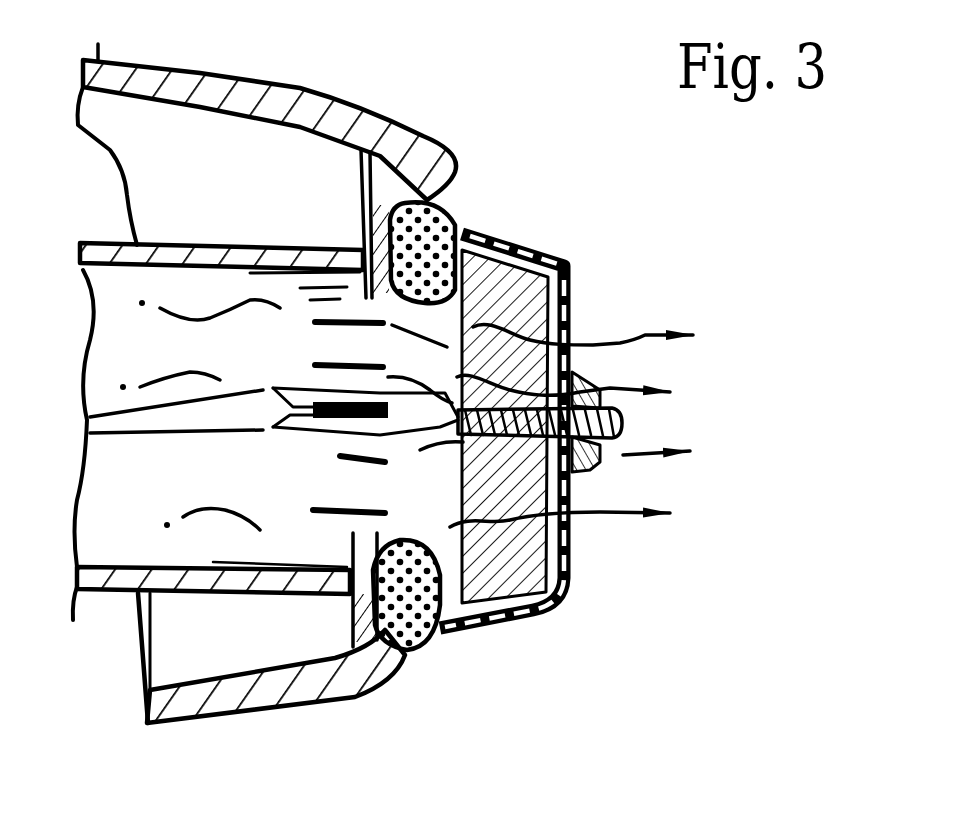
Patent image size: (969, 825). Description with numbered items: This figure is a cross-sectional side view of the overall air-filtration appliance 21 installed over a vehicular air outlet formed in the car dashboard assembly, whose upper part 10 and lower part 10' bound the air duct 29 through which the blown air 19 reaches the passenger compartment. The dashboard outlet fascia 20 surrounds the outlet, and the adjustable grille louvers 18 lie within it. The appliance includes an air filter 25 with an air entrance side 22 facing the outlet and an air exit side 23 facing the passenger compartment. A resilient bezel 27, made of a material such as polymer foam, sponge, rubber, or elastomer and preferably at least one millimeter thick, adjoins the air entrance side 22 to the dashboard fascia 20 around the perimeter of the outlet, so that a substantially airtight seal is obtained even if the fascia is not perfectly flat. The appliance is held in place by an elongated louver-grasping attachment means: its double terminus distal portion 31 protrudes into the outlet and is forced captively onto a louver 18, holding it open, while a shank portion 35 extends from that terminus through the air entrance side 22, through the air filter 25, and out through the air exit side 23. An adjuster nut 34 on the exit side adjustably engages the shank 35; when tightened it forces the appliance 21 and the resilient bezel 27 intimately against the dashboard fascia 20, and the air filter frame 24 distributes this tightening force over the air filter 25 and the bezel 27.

The car dashboard assembly (upper) 10 is at (267, 144).
The car dashboard assembly (lower) 10' is at (225, 519).
The louver of adjustable grille 18 is at (310, 462).
The blown air 19 is at (672, 355).
The dashboard outlet fascia 20 is at (367, 245).
The air-filtration appliance 21 is at (617, 290).
The air entrance side of air filter 22 is at (470, 548).
The air exit side of air filter 23 is at (560, 493).
The air filter frame 24 is at (577, 317).
The air filter 25 is at (517, 533).
The resilient bezel 27 is at (443, 200).
The air duct 29 is at (197, 237).
The double terminus distal portion 31 is at (92, 434).
The adjuster nut 34 is at (600, 383).
The shank portion of attachment means 35 is at (458, 417).